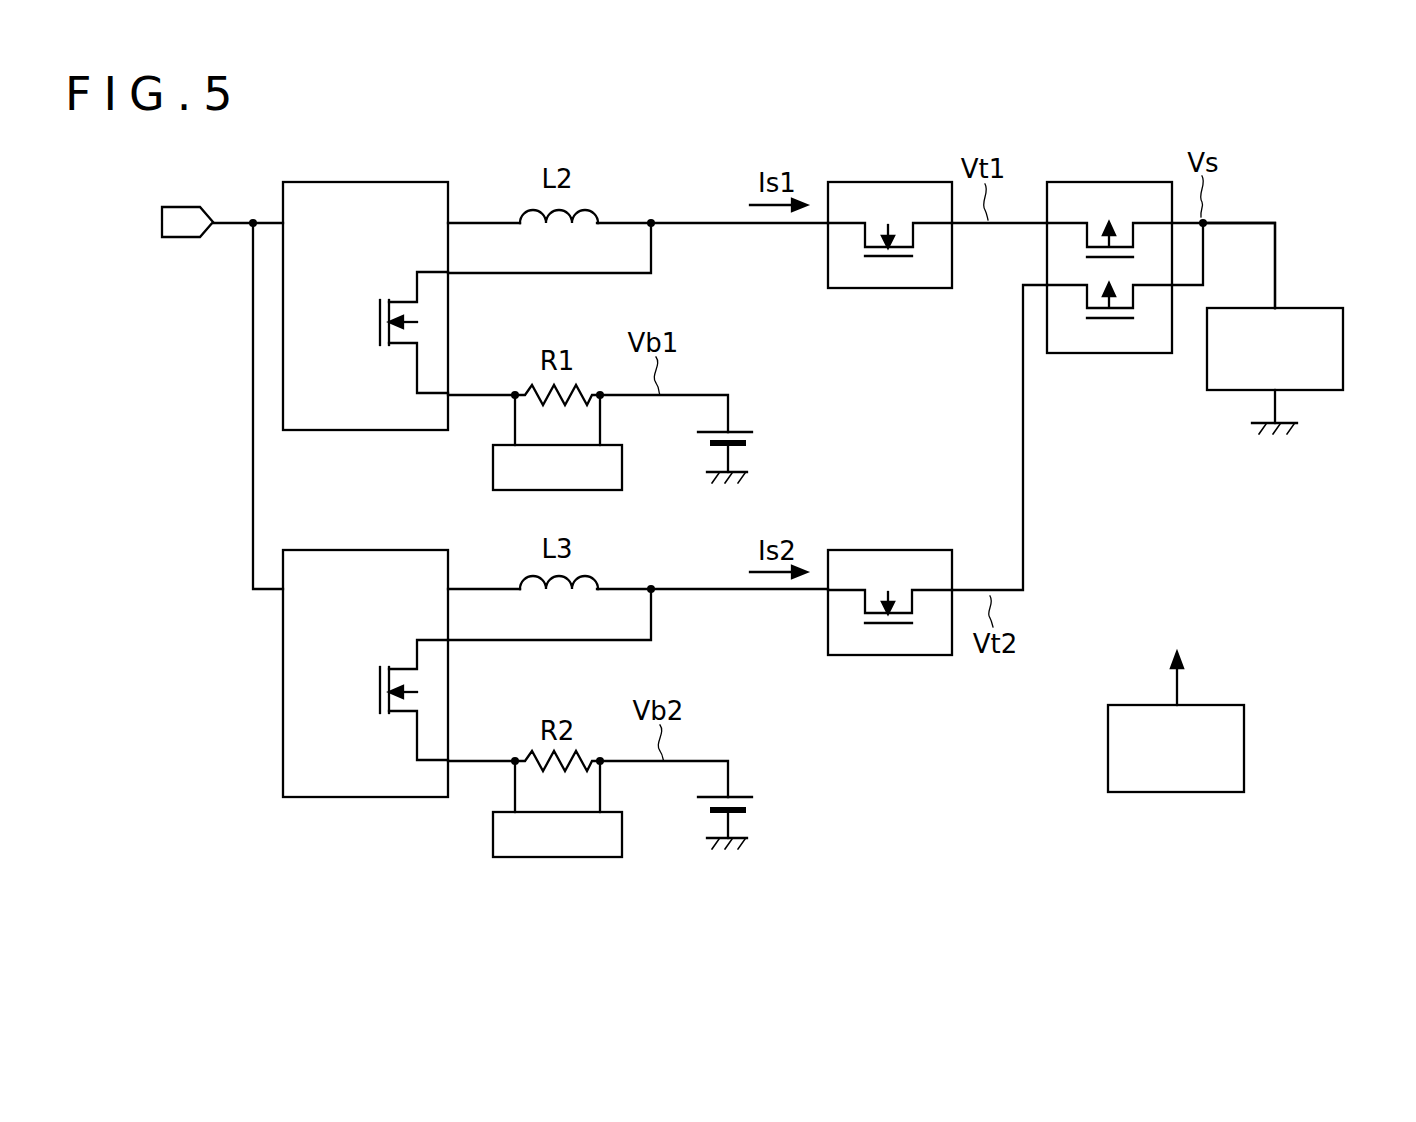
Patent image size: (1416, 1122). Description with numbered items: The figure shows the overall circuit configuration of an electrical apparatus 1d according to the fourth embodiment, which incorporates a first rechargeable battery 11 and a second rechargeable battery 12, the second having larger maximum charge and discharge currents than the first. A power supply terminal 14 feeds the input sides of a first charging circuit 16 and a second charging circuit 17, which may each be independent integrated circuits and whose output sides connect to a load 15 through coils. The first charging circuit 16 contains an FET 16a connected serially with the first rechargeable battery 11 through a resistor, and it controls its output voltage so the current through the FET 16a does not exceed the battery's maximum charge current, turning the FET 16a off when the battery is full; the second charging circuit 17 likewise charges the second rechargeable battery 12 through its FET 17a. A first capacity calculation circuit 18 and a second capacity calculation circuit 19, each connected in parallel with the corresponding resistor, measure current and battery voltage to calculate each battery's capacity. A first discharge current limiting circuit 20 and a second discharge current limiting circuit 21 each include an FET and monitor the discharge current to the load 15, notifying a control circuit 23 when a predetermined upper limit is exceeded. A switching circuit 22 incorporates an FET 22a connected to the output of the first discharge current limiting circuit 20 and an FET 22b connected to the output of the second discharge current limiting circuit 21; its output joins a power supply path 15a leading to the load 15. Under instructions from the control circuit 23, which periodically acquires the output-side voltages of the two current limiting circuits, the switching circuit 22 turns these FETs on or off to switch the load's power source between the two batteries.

The power supply terminal 14 is at (182, 208).
The first charging circuit 16 is at (365, 341).
The FET 16a is at (375, 323).
The second charging circuit 17 is at (365, 709).
The FET 17a is at (375, 693).
The first capacity calculation circuit 18 is at (557, 442).
The second capacity calculation circuit 19 is at (557, 809).
The first rechargeable battery 11 is at (765, 433).
The second rechargeable battery 12 is at (765, 800).
The first discharge current limiting circuit 20 is at (928, 290).
The second discharge current limiting circuit 21 is at (928, 656).
The switching circuit 22 is at (1110, 290).
The FET 22a is at (1105, 210).
The FET 22b is at (1105, 330).
The load 15 is at (1275, 371).
The power supply path 15a is at (1257, 218).
The control circuit 23 is at (1176, 722).
The electrical apparatus 1d is at (1341, 816).